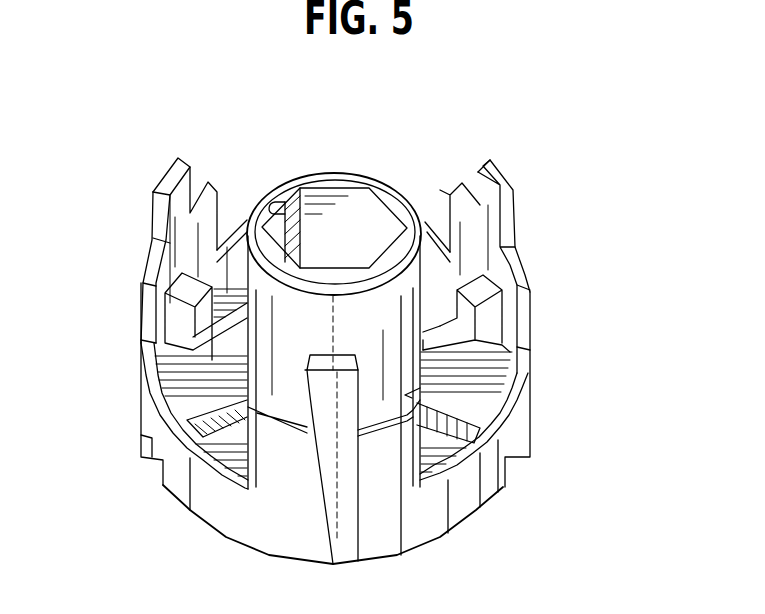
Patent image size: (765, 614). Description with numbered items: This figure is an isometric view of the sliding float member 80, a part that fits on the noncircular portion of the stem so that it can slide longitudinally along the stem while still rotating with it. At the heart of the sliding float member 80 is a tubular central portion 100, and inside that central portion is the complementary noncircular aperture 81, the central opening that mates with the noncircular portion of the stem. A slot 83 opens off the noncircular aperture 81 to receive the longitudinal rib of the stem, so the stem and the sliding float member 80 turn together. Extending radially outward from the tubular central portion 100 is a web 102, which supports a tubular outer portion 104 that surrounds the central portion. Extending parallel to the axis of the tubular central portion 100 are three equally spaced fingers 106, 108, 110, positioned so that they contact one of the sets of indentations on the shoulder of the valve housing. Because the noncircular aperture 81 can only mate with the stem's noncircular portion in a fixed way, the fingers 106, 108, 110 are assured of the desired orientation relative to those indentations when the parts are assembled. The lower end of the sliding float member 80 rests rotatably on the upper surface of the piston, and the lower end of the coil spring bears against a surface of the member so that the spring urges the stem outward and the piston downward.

The sliding float member 80 is at (253, 552).
The noncircular aperture 81 is at (383, 210).
The slot 83 is at (283, 207).
The tubular central portion 100 is at (412, 395).
The web 102 is at (493, 383).
The tubular outer portion 104 is at (380, 463).
The finger 106 is at (507, 178).
The finger 108 is at (331, 566).
The finger 110 is at (167, 178).